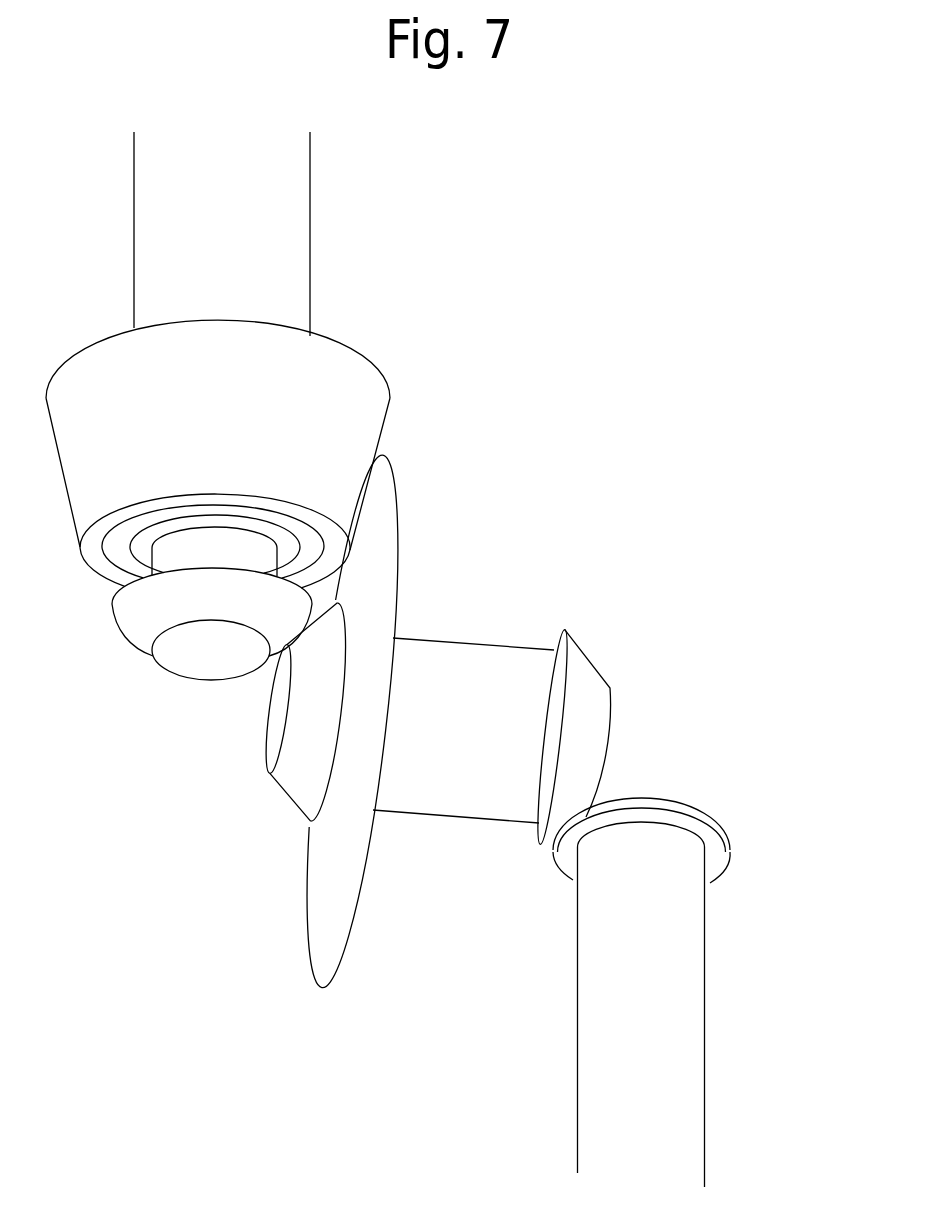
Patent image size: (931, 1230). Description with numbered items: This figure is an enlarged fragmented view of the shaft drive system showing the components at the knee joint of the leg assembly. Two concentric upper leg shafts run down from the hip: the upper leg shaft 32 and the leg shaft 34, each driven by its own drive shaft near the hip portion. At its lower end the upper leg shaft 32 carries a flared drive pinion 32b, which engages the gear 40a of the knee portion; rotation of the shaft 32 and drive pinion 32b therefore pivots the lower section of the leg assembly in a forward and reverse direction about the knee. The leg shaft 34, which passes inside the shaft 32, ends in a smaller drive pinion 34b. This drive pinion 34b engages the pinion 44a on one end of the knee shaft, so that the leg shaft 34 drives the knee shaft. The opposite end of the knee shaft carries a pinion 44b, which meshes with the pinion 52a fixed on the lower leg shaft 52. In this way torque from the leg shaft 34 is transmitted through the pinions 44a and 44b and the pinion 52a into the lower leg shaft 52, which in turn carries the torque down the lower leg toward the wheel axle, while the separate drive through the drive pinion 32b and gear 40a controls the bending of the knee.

The upper leg shaft 32 is at (235, 254).
The drive pinion 32b is at (360, 393).
The leg shaft 34 is at (225, 561).
The drive pinion 34b is at (138, 627).
The gear 40a is at (320, 970).
The pinion 44a is at (292, 778).
The pinion 44b is at (597, 687).
The pinion 52a is at (693, 818).
The lower leg shaft 52 is at (683, 1005).